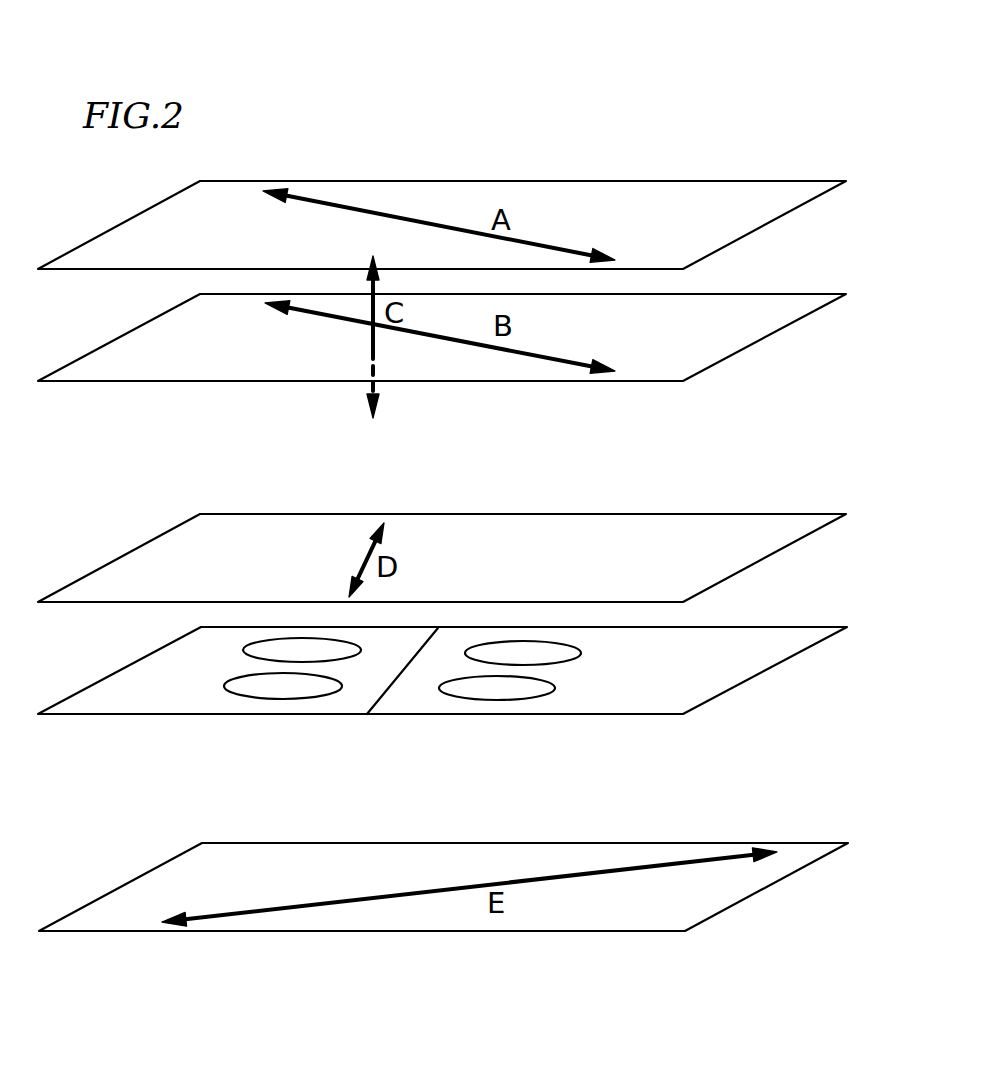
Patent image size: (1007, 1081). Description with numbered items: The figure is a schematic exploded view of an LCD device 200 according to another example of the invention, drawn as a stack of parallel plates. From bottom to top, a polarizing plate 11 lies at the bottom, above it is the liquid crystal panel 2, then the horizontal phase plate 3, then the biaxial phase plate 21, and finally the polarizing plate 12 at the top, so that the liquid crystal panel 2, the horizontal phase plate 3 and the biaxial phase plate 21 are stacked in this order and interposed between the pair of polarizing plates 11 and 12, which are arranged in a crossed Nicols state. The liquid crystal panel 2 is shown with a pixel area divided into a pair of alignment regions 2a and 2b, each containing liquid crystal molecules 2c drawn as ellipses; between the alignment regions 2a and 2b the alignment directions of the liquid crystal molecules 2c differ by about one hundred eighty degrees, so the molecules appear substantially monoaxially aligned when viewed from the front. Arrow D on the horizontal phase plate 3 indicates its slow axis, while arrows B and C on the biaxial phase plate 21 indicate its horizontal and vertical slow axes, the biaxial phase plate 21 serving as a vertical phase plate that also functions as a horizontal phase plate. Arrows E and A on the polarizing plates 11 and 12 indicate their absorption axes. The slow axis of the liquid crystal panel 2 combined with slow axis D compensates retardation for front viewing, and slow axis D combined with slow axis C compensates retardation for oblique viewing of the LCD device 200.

The LCD device 200 is at (803, 112).
The polarizing plate 12 is at (770, 223).
The biaxial phase plate 21 is at (800, 318).
The horizontal phase plate 3 is at (805, 538).
The liquid crystal panel 2 is at (443, 699).
The alignment region 2a is at (358, 686).
The alignment region 2b is at (600, 691).
The liquid crystal molecules 2c is at (498, 692).
The polarizing plate 11 is at (818, 860).